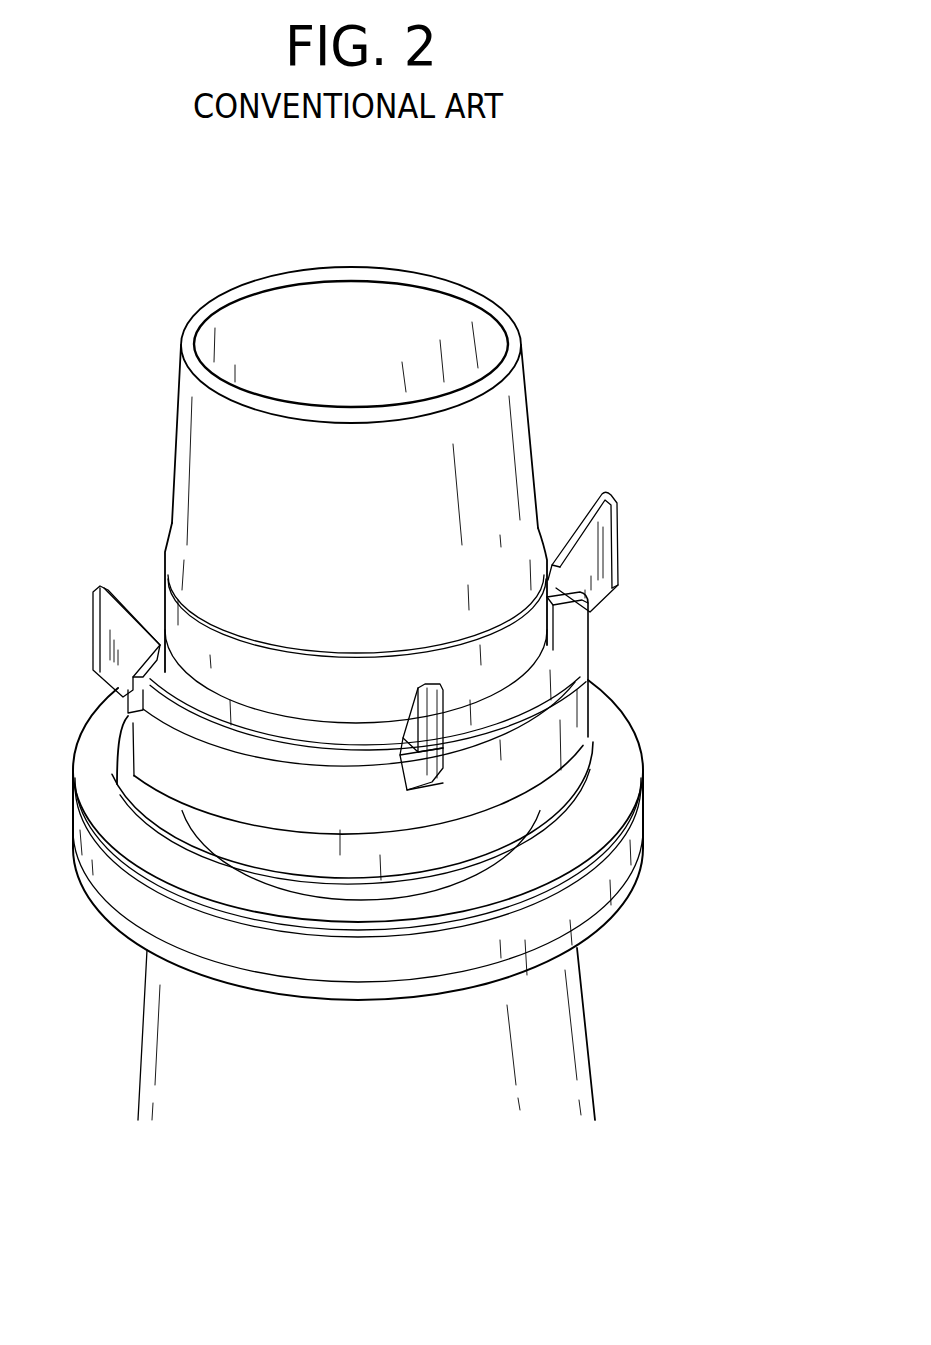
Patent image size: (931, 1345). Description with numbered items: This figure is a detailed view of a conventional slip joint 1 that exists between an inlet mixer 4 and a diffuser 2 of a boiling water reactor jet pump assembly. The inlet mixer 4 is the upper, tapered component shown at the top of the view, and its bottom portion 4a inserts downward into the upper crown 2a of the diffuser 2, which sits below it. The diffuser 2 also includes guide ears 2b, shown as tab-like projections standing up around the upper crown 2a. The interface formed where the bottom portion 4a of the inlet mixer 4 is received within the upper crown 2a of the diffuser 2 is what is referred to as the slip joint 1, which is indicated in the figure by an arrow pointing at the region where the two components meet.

The slip joint 1 is at (612, 633).
The diffuser 2 is at (512, 1067).
The upper crown 2a is at (527, 760).
The guide ears 2b is at (598, 558).
The inlet mixer 4 is at (493, 447).
The bottom portion 4a is at (178, 608).